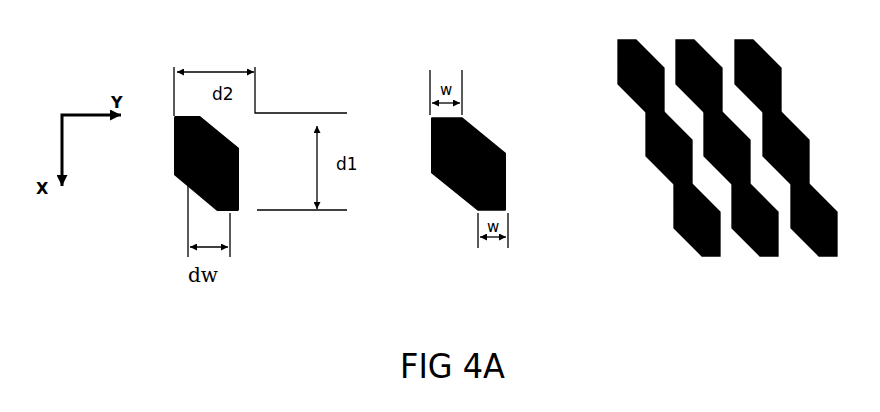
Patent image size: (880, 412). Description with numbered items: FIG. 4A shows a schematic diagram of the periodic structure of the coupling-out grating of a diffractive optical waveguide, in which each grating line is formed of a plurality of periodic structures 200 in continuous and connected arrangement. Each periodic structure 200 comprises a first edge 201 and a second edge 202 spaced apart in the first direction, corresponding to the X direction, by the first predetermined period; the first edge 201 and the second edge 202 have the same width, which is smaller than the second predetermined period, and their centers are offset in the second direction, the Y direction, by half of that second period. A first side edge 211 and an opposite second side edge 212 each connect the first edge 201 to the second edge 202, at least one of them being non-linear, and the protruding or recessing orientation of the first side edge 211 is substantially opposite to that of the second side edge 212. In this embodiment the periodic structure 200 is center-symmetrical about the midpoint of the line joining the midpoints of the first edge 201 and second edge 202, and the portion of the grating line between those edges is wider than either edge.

The periodic structure 200 is at (322, 132).
The first edge 201 is at (182, 115).
The second edge 202 is at (239, 212).
The first side edge 211 is at (174, 160).
The second side edge 212 is at (240, 147).